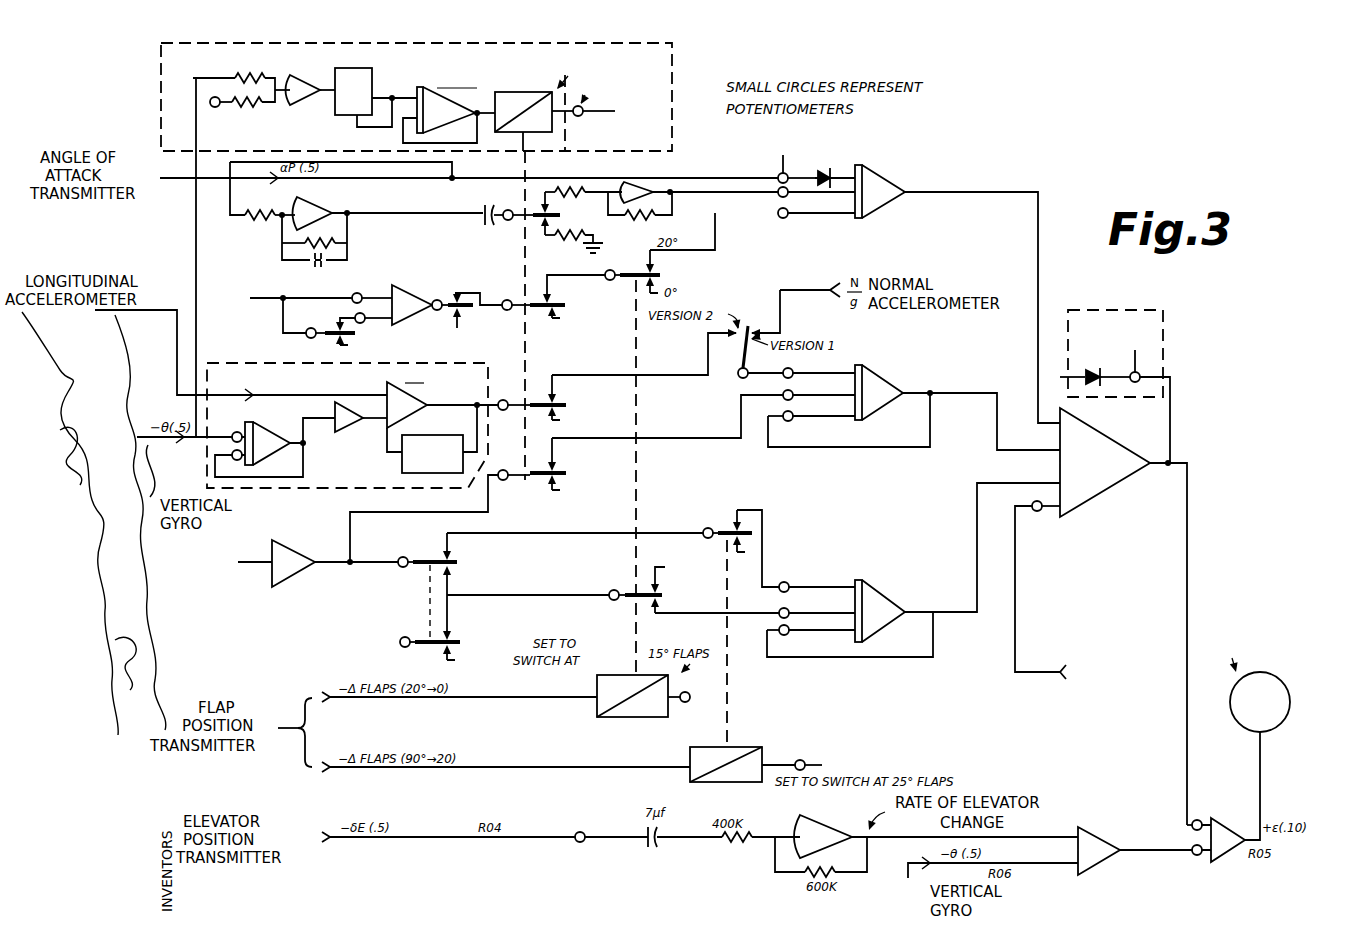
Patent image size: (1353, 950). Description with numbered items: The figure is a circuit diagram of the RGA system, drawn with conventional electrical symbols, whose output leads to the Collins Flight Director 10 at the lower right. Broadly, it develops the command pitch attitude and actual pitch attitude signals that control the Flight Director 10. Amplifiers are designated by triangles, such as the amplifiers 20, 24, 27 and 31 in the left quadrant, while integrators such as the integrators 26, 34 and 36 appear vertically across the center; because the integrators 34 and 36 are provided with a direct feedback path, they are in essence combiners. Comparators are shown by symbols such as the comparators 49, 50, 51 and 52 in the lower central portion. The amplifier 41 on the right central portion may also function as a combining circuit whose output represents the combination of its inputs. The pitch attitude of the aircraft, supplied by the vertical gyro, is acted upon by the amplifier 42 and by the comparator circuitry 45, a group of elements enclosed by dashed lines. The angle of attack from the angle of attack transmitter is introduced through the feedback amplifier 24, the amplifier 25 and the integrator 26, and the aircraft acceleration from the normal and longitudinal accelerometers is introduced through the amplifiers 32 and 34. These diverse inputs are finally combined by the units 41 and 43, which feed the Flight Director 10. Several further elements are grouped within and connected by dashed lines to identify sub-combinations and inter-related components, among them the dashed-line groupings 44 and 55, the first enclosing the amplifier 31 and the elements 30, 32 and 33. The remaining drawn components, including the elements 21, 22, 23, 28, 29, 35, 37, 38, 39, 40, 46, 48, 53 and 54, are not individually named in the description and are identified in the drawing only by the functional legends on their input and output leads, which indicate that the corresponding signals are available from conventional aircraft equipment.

The Collins Flight Director 10 is at (1275, 669).
The amplifier 20 is at (300, 80).
The flip-flop 21 is at (373, 74).
The lag amplifier 22 is at (420, 88).
The comparator 23 is at (570, 107).
The feedback amplifier 24 is at (322, 212).
The amplifier 25 is at (633, 182).
The integrator 26 is at (868, 172).
The amplifier 27 is at (432, 290).
The acceleration switch 28 is at (480, 293).
The maximum switch 29 is at (480, 330).
The pitch attitude amplifier 30 is at (268, 435).
The amplifier 31 is at (349, 428).
The amplifier 32 is at (422, 410).
The limiter 33 is at (402, 467).
The integrator 34 is at (887, 398).
The amplifier 35 is at (288, 552).
The integrator 36 is at (881, 600).
The flap comparator 37 is at (597, 710).
The flap comparator 38 is at (690, 754).
The capacitor 39 is at (653, 847).
The rate amplifier 40 is at (835, 825).
The amplifier 41 is at (1100, 446).
The amplifier 42 is at (483, 212).
The combining unit 43 is at (1226, 820).
The vertical acceleration computing circuit 44 is at (256, 365).
The comparator circuitry 45 is at (161, 93).
The control line 46 is at (529, 170).
The diode 48 is at (820, 172).
The comparator 49 is at (438, 557).
The comparator 50 is at (714, 527).
The comparator 51 is at (450, 638).
The comparator 52 is at (666, 598).
The switch 53 is at (560, 470).
The pickle signal line 54 is at (1016, 618).
The limit circuit 55 is at (1135, 310).